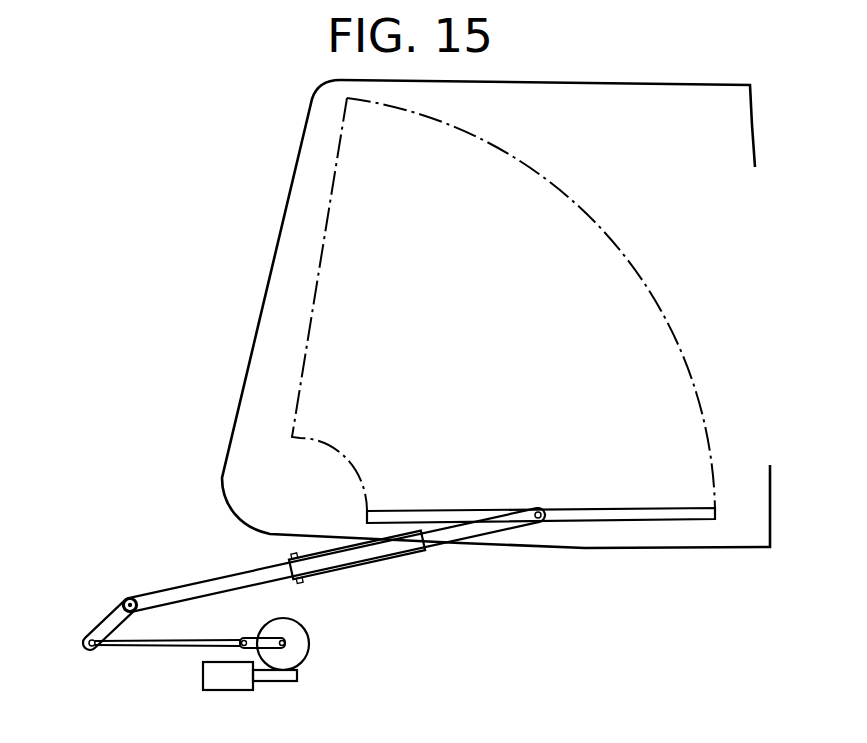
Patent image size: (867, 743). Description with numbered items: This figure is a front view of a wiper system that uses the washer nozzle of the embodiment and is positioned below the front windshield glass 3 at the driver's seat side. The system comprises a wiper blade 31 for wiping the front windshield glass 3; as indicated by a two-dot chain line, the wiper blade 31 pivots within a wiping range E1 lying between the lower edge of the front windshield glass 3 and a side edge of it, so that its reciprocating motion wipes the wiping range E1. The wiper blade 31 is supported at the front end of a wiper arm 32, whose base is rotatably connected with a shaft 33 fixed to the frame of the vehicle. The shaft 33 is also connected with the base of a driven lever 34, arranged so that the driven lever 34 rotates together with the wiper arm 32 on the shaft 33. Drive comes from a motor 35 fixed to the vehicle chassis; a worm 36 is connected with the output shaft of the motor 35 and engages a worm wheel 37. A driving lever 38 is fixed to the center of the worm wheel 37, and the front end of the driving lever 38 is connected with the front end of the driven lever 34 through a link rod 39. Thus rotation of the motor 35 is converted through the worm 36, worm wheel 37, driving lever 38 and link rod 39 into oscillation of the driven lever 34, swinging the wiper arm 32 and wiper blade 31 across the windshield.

The front windshield glass 3 is at (677, 107).
The wiping range E1 is at (598, 226).
The wiper blade 31 is at (627, 518).
The wiper arm 32 is at (407, 548).
The shaft 33 is at (130, 598).
The driven lever 34 is at (103, 625).
The motor 35 is at (212, 684).
The worm 36 is at (280, 683).
The worm wheel 37 is at (304, 641).
The driving lever 38 is at (279, 636).
The link rod 39 is at (128, 650).